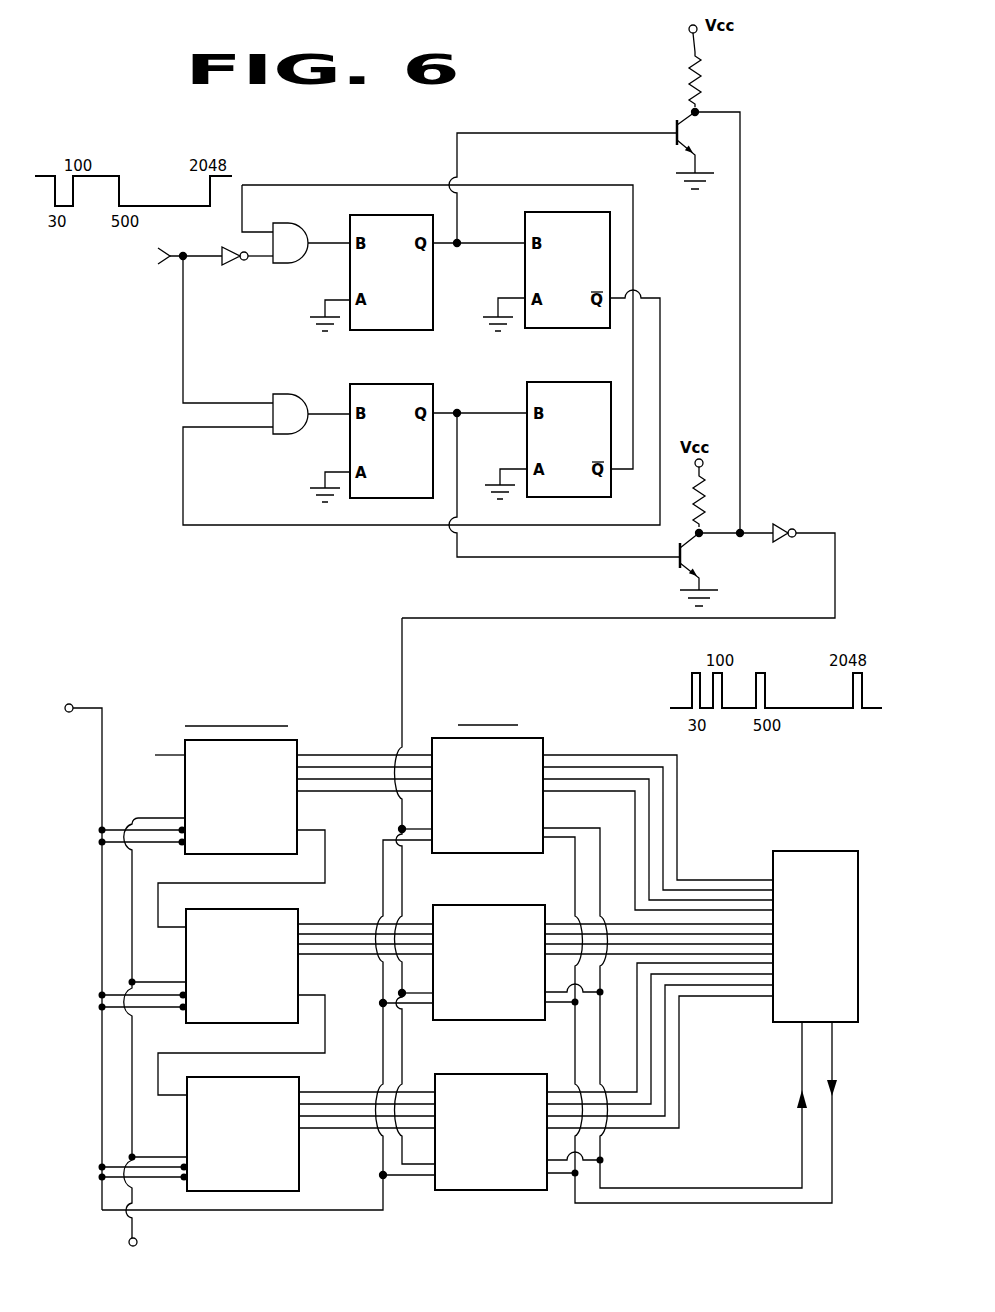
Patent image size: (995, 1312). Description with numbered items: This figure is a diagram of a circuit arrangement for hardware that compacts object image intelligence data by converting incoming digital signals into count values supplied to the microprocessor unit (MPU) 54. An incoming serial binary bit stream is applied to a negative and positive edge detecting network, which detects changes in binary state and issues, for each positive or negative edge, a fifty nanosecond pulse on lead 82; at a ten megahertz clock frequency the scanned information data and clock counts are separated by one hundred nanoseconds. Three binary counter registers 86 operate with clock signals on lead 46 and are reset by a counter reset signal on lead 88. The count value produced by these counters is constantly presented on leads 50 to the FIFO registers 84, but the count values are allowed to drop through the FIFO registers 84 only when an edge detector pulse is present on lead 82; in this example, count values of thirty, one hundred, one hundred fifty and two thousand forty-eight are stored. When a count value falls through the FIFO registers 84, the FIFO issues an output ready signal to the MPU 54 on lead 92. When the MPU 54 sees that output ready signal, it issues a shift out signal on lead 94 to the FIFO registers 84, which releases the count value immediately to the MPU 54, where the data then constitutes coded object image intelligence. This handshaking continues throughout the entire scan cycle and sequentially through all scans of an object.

The lead 82 is at (842, 542).
The lead 88 is at (80, 708).
The binary counter registers 86 is at (300, 745).
The leads 50 is at (362, 766).
The FIFO registers 84 is at (545, 744).
The microprocessor unit (MPU) 54 is at (808, 850).
The lead 92 is at (712, 1187).
The lead 94 is at (834, 1182).
The lead 46 is at (130, 1228).